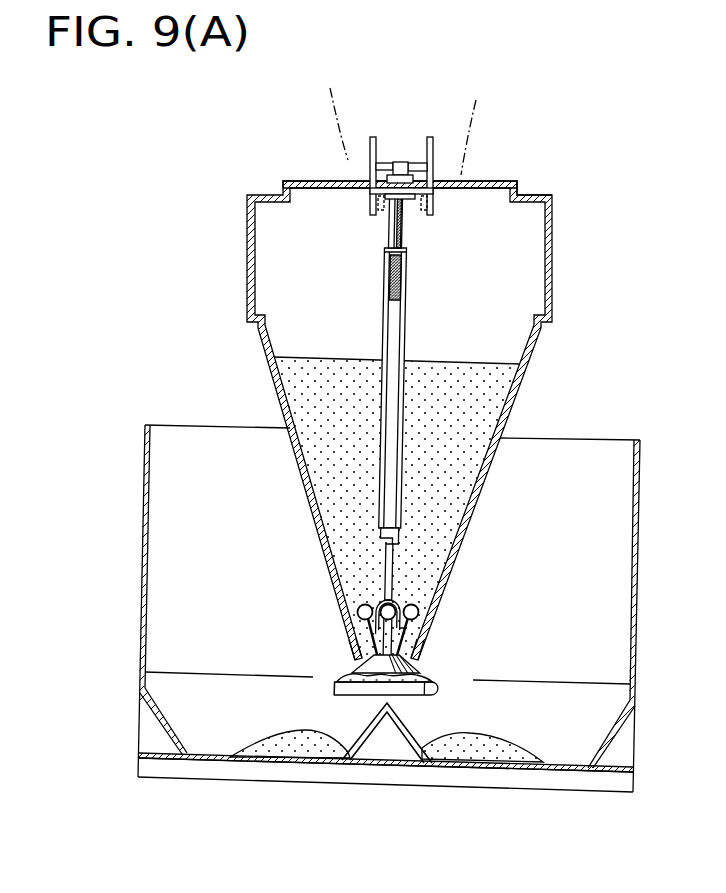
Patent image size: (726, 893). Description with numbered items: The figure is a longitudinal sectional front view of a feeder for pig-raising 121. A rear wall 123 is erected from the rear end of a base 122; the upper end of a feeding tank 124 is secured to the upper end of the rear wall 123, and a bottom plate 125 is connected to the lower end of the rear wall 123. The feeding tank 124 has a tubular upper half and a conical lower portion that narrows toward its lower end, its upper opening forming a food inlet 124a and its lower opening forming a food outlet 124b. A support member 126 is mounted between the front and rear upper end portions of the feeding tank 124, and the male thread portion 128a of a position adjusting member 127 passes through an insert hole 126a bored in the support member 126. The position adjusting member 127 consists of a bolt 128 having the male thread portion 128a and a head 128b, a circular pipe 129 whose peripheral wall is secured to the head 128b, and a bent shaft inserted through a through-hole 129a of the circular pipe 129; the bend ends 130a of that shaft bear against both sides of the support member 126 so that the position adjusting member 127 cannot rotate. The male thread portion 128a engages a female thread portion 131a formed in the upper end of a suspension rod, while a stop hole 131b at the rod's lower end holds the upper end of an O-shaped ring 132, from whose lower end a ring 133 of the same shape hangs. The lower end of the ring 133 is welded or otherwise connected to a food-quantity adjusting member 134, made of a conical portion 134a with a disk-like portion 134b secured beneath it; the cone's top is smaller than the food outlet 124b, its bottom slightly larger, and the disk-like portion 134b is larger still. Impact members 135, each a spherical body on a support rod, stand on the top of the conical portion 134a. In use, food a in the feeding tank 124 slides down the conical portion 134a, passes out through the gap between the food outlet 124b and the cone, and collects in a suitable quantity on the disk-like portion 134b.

The feeder for pig-raising 121 is at (558, 142).
The base 122 is at (382, 775).
The rear wall 123 is at (590, 442).
The feeding tank 124 is at (297, 192).
The food inlet 124a is at (507, 186).
The food outlet 124b is at (420, 667).
The bottom plate 125 is at (210, 740).
The support member 126 is at (372, 207).
The insert hole 126a is at (430, 214).
The position adjusting member 127 is at (410, 163).
The bolt 128 is at (405, 230).
The male thread portion 128a is at (390, 231).
The head 128b is at (394, 188).
The circular pipe 129 is at (400, 162).
The through-hole 129a is at (418, 178).
The bend ends 130a is at (412, 112).
The female thread portion 131a is at (388, 380).
The stop hole 131b is at (382, 540).
The O-shaped ring 132 is at (393, 570).
The ring 133 is at (375, 597).
The food-quantity adjusting member 134 is at (433, 697).
The conical portion 134a is at (362, 667).
The disk-like portion 134b is at (343, 697).
The impact members 135 is at (357, 622).
The food a is at (510, 742).